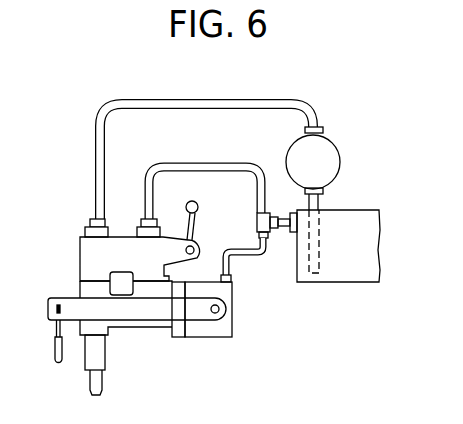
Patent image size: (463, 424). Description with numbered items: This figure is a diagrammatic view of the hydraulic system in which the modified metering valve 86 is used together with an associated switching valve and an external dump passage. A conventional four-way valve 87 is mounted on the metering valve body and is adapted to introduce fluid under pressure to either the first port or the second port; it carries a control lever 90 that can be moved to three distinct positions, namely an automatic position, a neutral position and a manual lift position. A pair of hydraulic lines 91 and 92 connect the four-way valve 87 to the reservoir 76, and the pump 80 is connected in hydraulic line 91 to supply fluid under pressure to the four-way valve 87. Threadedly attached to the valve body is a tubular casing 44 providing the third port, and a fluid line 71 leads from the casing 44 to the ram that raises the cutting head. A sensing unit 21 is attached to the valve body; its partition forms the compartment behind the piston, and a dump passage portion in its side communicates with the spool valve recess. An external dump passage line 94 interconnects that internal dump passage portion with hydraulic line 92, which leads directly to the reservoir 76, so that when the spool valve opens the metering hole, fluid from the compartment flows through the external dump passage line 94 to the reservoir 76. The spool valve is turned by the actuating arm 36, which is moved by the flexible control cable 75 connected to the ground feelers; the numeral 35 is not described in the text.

The hydraulic line 91 is at (200, 100).
The hydraulic line 92 is at (202, 163).
The pump 80 is at (333, 155).
The reservoir 76 is at (362, 209).
The external dump passage line 94 is at (253, 260).
The control lever 90 is at (198, 220).
The four-way valve 87 is at (79, 247).
The modified metering valve 86 is at (79, 290).
The actuating arm 36 is at (48, 308).
The flexible control cable 75 is at (54, 350).
The tubular casing 44 is at (106, 355).
The fluid line 71 is at (102, 383).
The sensing unit 21 is at (211, 339).
The frame member 35 is at (9, 173).